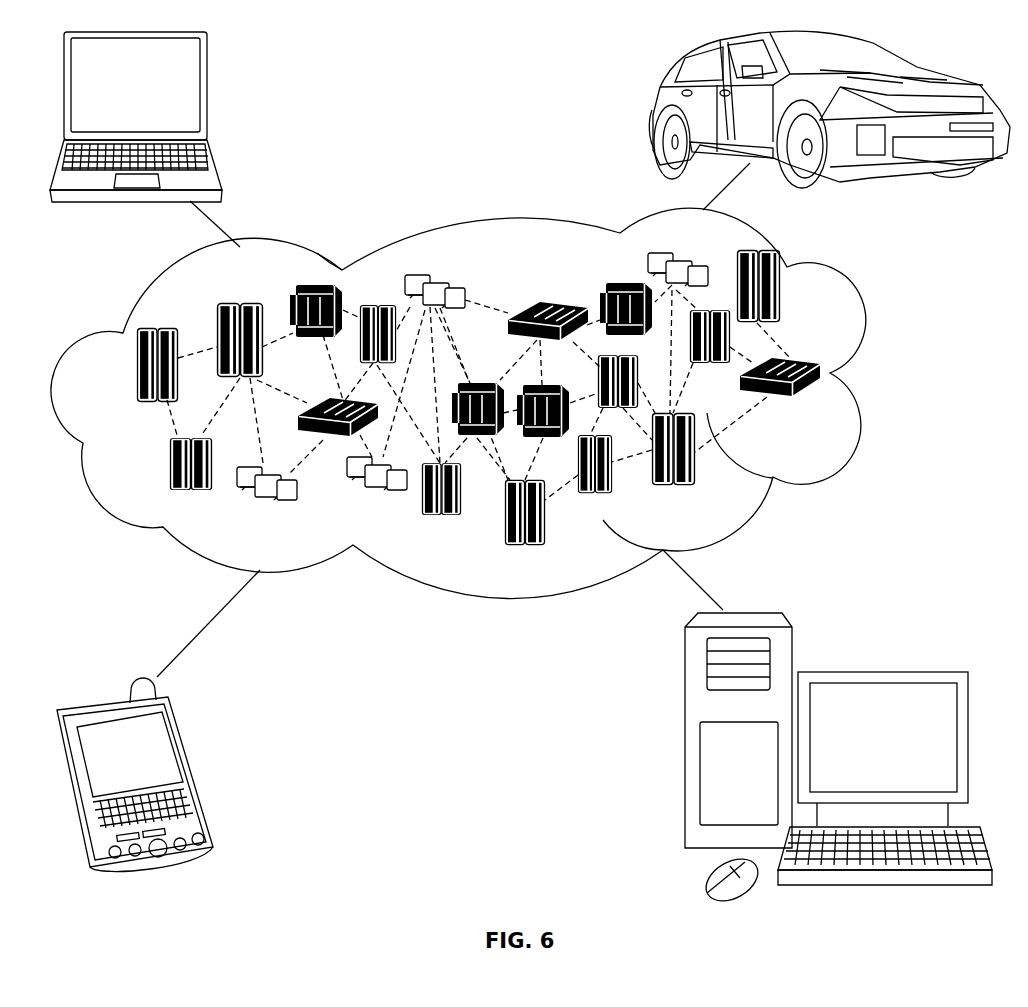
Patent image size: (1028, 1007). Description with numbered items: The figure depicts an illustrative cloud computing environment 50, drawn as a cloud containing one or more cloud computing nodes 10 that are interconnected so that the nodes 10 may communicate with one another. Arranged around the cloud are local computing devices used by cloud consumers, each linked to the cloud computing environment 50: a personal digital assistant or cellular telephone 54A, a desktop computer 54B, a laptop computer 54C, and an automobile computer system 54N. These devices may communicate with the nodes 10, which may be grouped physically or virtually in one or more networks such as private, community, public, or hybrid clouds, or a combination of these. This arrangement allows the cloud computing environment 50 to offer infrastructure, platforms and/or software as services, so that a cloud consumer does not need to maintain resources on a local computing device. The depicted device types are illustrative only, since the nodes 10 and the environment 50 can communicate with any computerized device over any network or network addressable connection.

The cloud computing nodes 10 is at (828, 408).
The cloud computing environment 50 is at (880, 377).
The personal digital assistant (PDA) or cellular telephone 54A is at (197, 765).
The desktop computer 54B is at (880, 671).
The laptop computer 54C is at (207, 95).
The automobile computer system 54N is at (654, 108).